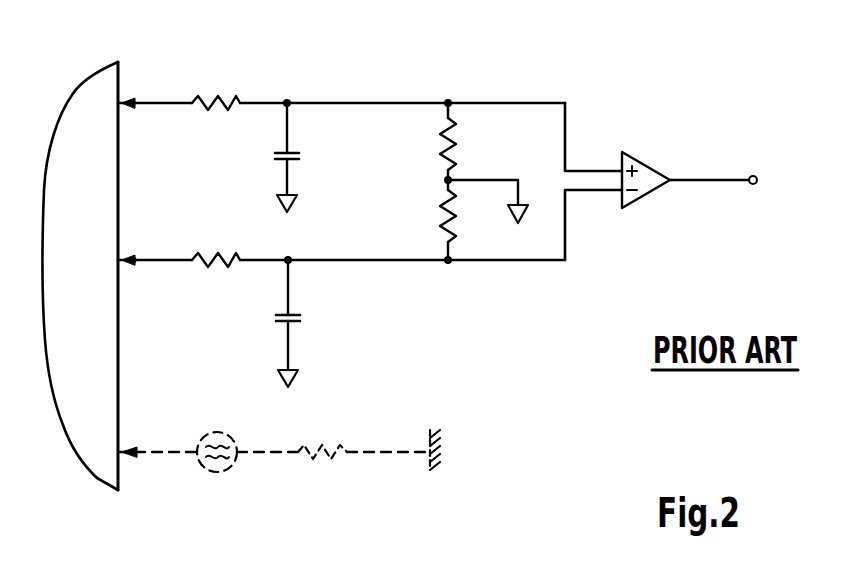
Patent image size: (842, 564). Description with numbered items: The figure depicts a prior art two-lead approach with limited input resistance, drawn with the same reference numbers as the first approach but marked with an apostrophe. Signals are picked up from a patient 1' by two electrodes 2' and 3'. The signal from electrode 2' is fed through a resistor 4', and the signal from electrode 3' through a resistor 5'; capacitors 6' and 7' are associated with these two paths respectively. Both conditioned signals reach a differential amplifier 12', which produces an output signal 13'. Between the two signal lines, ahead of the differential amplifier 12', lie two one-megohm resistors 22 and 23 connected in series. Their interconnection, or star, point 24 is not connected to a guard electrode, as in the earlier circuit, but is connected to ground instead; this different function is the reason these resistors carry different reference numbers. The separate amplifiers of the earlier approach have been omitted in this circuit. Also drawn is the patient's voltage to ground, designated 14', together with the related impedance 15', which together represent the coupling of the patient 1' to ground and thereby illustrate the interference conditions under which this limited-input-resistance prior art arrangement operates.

The patient 1' is at (80, 287).
The electrode 2' is at (155, 71).
The electrode 3' is at (155, 225).
The resistor 4' is at (224, 72).
The resistor 5' is at (216, 226).
The capacitor 6' is at (308, 155).
The capacitor 7' is at (313, 321).
The 1 MΩ resistor 22 is at (453, 138).
The 1 MΩ resistor 23 is at (442, 230).
The interconnection (star) point 24 is at (442, 184).
The differential amplifier 12' is at (661, 159).
The output signal 13' is at (736, 201).
The patient's voltage to ground 14' is at (185, 492).
The impedance 15' is at (333, 493).